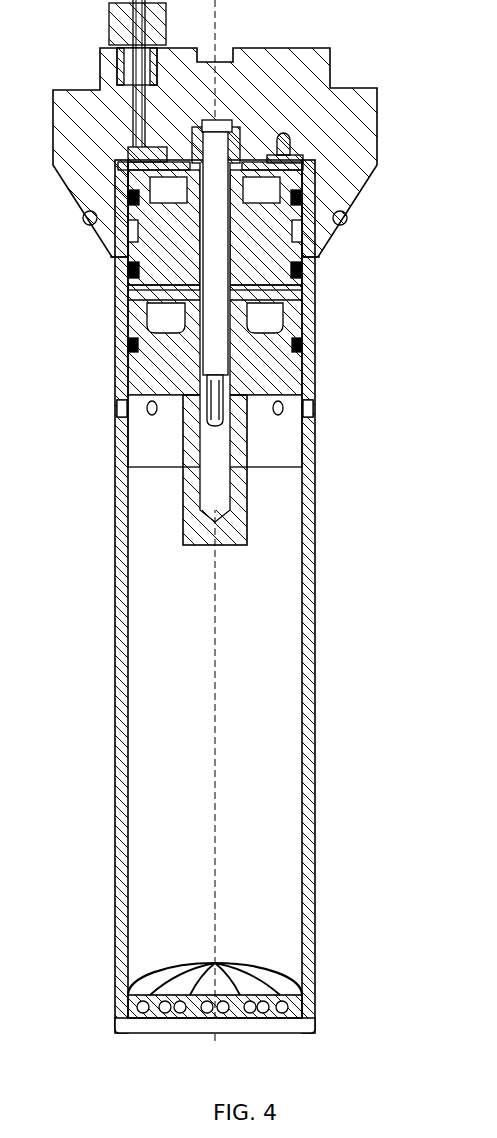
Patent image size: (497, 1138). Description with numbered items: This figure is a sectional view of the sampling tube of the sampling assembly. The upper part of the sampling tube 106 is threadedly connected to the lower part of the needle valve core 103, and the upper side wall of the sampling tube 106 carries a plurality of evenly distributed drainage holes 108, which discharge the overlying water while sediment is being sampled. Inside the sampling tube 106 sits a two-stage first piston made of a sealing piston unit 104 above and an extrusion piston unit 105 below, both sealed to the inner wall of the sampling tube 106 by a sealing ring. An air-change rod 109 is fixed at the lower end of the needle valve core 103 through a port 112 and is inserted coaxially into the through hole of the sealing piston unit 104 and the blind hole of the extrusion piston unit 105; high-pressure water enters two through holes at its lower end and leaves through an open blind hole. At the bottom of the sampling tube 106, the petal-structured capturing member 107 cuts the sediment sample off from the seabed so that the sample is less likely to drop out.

The needle valve core 103 is at (370, 153).
The sealing piston unit 104 is at (128, 288).
The extrusion piston unit 105 is at (122, 400).
The sampling tube 106 is at (145, 608).
The capturing member 107 is at (264, 985).
The drainage holes 108 is at (300, 403).
The air-change rod 109 is at (288, 292).
The port 112 is at (238, 138).